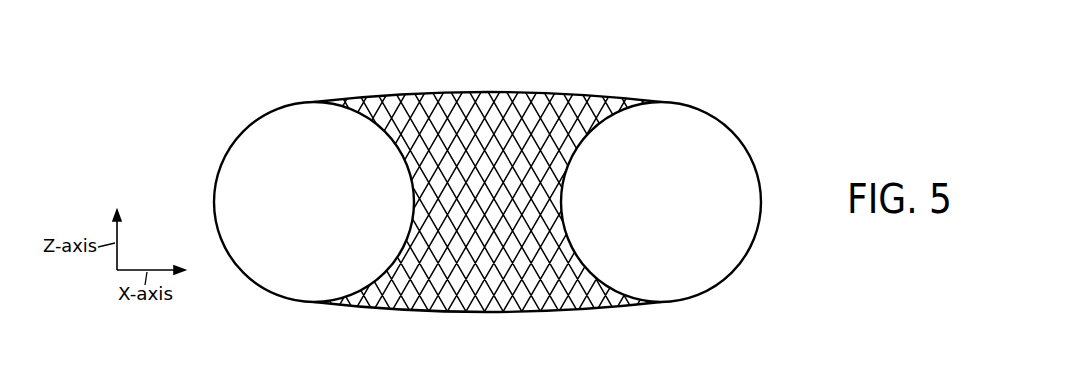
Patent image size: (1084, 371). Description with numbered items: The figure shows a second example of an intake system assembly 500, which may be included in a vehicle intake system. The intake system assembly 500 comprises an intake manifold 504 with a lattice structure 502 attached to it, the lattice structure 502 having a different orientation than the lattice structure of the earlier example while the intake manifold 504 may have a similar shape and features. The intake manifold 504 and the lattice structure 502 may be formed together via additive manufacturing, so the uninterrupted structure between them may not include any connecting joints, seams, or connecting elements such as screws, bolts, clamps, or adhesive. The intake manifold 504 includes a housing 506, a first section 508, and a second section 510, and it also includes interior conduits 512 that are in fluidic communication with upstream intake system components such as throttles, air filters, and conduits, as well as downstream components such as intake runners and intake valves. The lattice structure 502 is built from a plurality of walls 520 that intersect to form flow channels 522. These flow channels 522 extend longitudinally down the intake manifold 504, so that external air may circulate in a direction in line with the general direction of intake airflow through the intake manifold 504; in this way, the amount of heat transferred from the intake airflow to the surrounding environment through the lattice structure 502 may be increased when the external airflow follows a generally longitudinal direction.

The intake system assembly 500 is at (821, 49).
The lattice structure 502 is at (650, 93).
The intake manifold 504 is at (748, 95).
The housing 506 is at (756, 305).
The first section 508 is at (215, 102).
The second section 510 is at (687, 189).
The interior conduits 512 is at (486, 189).
The walls 520 is at (493, 312).
The flow channels 522 is at (442, 297).